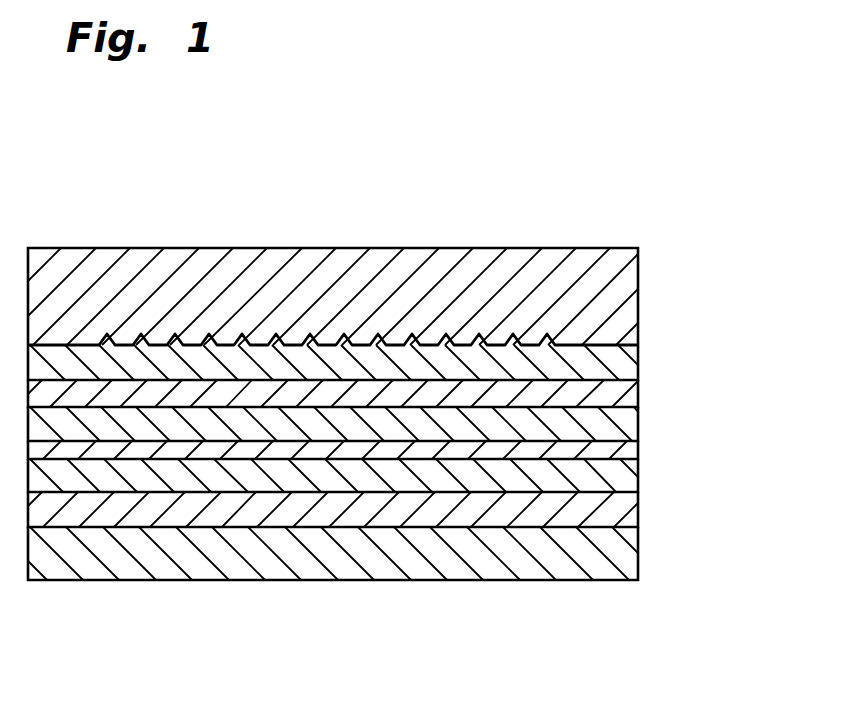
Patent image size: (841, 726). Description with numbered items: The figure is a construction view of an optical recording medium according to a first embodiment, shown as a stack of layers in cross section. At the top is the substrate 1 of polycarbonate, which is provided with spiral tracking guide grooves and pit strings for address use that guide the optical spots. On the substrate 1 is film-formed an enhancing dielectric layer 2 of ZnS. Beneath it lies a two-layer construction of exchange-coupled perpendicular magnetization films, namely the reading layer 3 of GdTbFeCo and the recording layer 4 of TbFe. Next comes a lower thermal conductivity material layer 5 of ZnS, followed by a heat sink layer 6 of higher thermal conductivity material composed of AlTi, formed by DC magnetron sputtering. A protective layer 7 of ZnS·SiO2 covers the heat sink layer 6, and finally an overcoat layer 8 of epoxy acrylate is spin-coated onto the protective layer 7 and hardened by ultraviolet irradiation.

The substrate 1 is at (586, 268).
The dielectric layer 2 is at (603, 358).
The reading layer 3 is at (615, 394).
The recording layer 4 is at (614, 426).
The lower thermal conductivity material layer 5 is at (626, 450).
The heat sink layer 6 is at (620, 480).
The protective layer 7 is at (618, 510).
The overcoat layer 8 is at (554, 562).